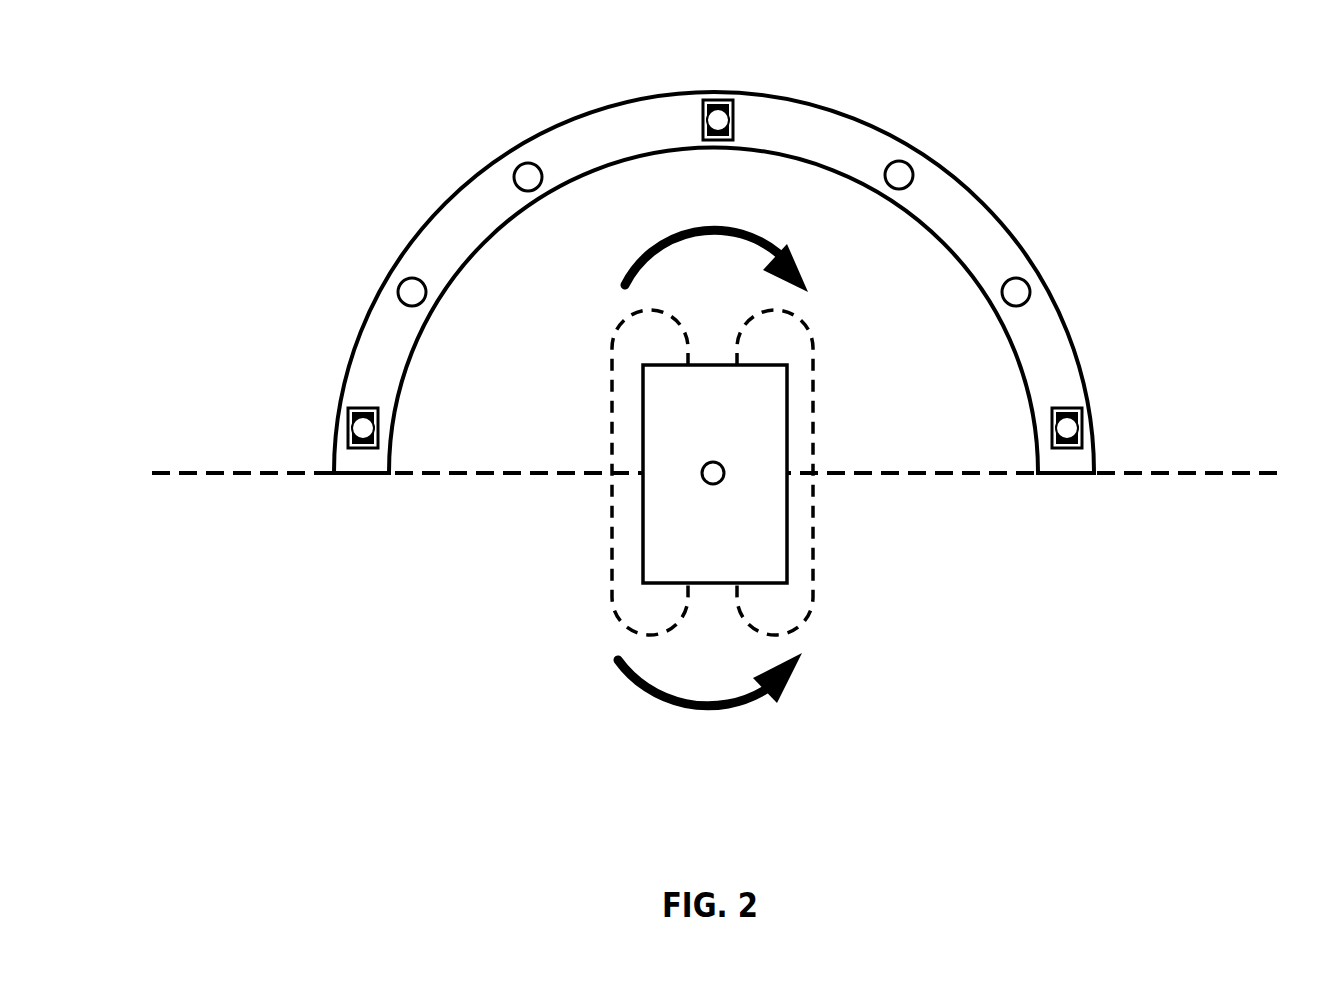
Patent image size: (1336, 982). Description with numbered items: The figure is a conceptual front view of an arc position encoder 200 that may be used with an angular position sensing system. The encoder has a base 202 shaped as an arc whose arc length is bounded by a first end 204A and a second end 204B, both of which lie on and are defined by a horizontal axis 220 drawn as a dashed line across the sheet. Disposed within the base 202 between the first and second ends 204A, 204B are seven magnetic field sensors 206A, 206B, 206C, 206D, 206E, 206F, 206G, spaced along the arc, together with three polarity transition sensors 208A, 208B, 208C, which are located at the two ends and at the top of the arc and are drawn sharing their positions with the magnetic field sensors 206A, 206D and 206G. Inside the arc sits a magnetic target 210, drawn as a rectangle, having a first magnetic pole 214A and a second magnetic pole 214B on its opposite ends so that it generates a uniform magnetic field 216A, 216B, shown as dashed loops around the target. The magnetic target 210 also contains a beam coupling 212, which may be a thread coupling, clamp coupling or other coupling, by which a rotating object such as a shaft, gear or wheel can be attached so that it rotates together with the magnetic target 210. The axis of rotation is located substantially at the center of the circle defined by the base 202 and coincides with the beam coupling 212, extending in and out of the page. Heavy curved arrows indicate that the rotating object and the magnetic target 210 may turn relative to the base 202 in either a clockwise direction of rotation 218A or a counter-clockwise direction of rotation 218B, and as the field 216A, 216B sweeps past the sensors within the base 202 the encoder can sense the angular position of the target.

The arc position encoder 200 is at (1021, 93).
The base 202 is at (829, 143).
The first end 204A is at (398, 469).
The second end 204B is at (1100, 469).
The magnetic field sensor 206A is at (370, 405).
The magnetic field sensor 206B is at (421, 283).
The magnetic field sensor 206C is at (537, 167).
The magnetic field sensor 206D is at (722, 92).
The magnetic field sensor 206E is at (908, 165).
The magnetic field sensor 206F is at (1025, 283).
The magnetic field sensor 206G is at (1068, 405).
The polarity transition sensor 208A is at (370, 405).
The polarity transition sensor 208B is at (722, 92).
The polarity transition sensor 208C is at (1068, 405).
The magnetic target 210 is at (776, 360).
The beam coupling 212 is at (730, 466).
The first magnetic pole 214A is at (730, 415).
The second magnetic pole 214B is at (730, 520).
The uniform magnetic field 216A is at (644, 310).
The uniform magnetic field 216B is at (822, 605).
The clockwise direction of rotation 218A is at (815, 283).
The counter-clockwise direction of rotation 218B is at (815, 660).
The horizontal axis 220 is at (1240, 468).